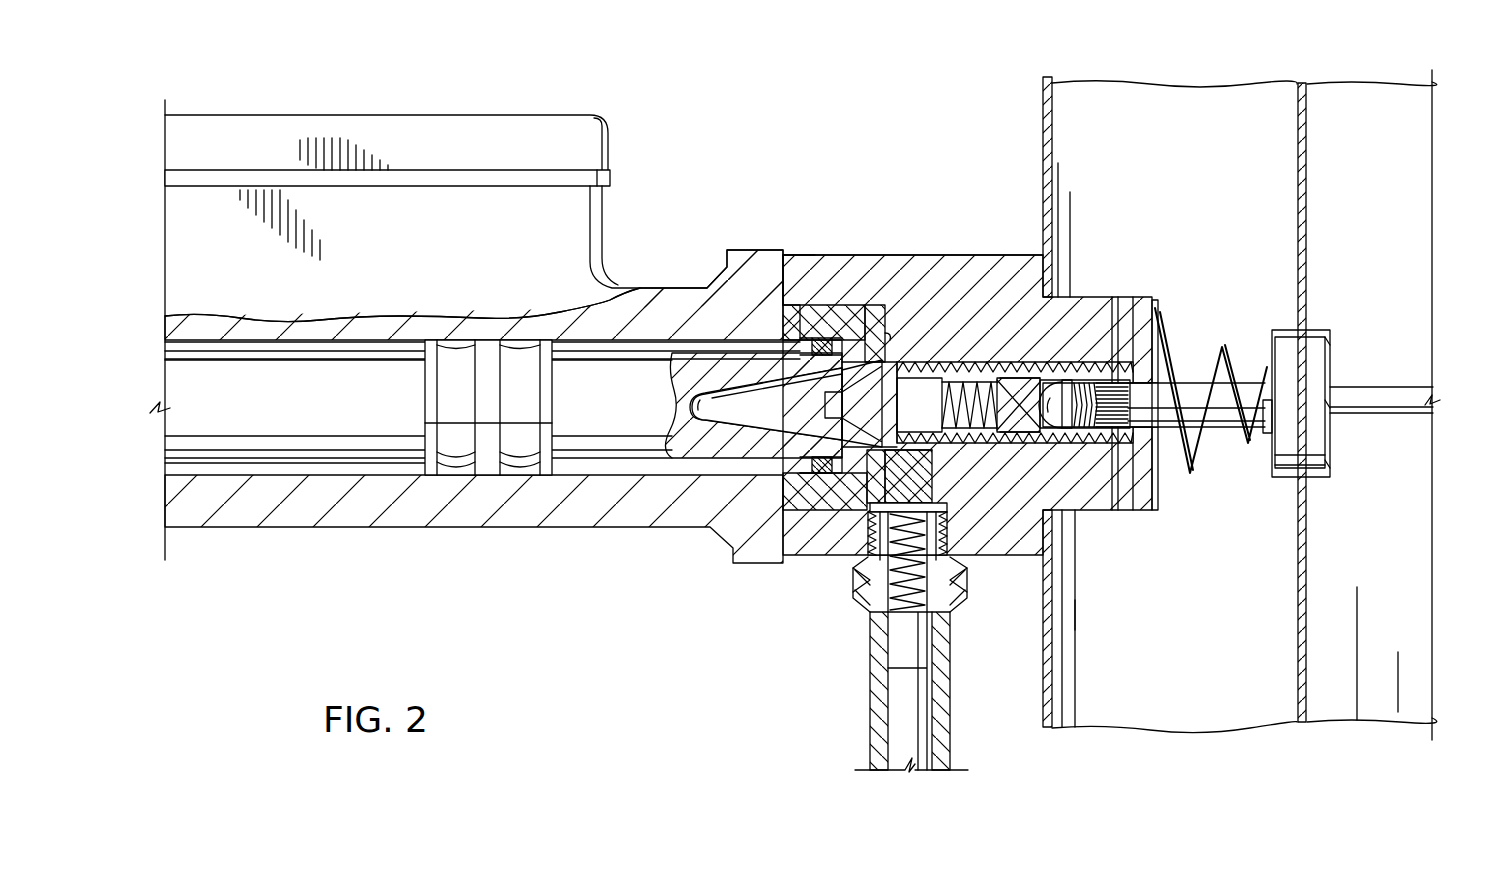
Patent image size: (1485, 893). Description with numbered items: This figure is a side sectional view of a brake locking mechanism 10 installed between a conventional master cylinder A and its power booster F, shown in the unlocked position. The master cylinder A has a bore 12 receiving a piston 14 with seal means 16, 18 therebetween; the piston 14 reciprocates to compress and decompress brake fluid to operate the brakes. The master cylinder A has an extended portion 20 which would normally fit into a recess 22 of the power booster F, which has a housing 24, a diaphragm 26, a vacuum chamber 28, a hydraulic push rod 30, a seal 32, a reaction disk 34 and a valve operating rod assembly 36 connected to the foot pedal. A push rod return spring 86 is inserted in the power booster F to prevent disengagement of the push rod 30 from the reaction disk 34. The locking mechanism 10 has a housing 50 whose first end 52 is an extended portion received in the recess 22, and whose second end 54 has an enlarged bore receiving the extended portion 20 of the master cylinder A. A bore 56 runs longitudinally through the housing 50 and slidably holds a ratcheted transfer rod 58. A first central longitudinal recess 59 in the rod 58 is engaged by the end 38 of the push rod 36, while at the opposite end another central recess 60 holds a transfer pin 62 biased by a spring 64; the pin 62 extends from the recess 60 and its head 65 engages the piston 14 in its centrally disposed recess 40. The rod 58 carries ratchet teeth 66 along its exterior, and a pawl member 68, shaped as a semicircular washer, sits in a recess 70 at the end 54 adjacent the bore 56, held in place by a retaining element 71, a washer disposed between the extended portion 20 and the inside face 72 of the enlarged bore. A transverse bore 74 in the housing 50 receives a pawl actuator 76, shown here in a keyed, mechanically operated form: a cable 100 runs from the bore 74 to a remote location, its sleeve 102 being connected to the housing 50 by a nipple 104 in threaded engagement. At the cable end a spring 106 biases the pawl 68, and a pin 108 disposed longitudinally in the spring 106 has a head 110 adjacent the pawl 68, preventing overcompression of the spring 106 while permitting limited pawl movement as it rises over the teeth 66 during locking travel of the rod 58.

The master cylinder A is at (600, 215).
The power booster F is at (1042, 103).
The locking mechanism 10 is at (830, 258).
The bore 12 is at (622, 468).
The piston 14 is at (242, 423).
The seal means 16 is at (487, 348).
The seal means 18 is at (818, 336).
The extended portion 20 is at (787, 323).
The recess 22 is at (1130, 300).
The housing 24 is at (1042, 152).
The diaphragm 26 is at (1308, 608).
The vacuum chamber 28 is at (1196, 623).
The hydraulic push rod 30 is at (1188, 385).
The seal 32 is at (1152, 430).
The reaction disk 34 is at (1332, 443).
The valve operating rod assembly 36 is at (1376, 395).
The end of the push rod 38 is at (1052, 392).
The recess 40 is at (720, 390).
The housing 50 is at (893, 270).
The first end 52 is at (1087, 305).
The second end 54 is at (797, 262).
The bore 56 is at (962, 375).
The ratcheted transfer rod 58 is at (1057, 447).
The first central longitudinal recess 59 is at (1068, 380).
The central longitudinal recess 60 is at (1015, 375).
The transfer pin 62 is at (929, 408).
The spring 64 is at (1017, 447).
The head 65 is at (832, 398).
The ratchet teeth 66 is at (1103, 447).
The pawl member 68 is at (918, 482).
The recess 70 is at (923, 458).
The retaining element 71 is at (875, 305).
The inside face 72 is at (882, 333).
The transverse bore 74 is at (947, 532).
The pawl actuator 76 is at (887, 528).
The push rod return spring 86 is at (1200, 453).
The cable 100 is at (917, 725).
The sleeve 102 is at (943, 697).
The nipple 104 is at (965, 577).
The spring 106 is at (885, 578).
The pin 108 is at (892, 555).
The head 110 is at (930, 510).